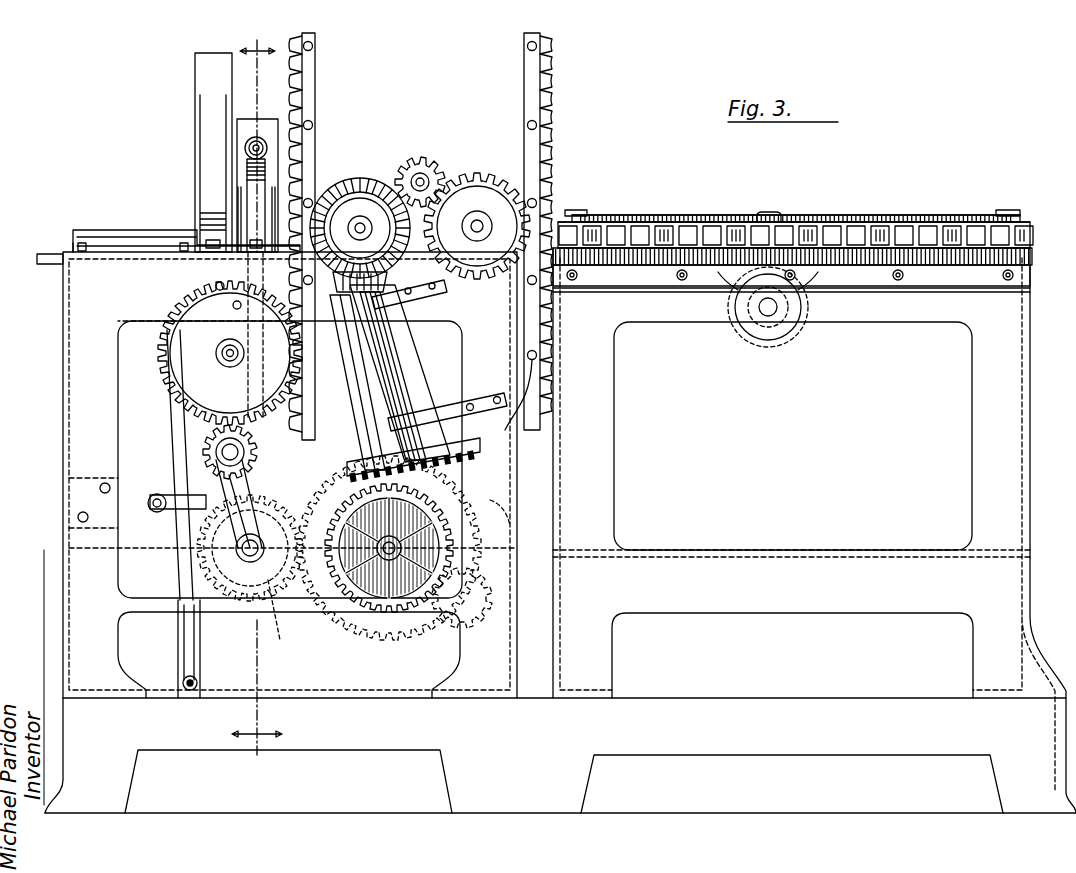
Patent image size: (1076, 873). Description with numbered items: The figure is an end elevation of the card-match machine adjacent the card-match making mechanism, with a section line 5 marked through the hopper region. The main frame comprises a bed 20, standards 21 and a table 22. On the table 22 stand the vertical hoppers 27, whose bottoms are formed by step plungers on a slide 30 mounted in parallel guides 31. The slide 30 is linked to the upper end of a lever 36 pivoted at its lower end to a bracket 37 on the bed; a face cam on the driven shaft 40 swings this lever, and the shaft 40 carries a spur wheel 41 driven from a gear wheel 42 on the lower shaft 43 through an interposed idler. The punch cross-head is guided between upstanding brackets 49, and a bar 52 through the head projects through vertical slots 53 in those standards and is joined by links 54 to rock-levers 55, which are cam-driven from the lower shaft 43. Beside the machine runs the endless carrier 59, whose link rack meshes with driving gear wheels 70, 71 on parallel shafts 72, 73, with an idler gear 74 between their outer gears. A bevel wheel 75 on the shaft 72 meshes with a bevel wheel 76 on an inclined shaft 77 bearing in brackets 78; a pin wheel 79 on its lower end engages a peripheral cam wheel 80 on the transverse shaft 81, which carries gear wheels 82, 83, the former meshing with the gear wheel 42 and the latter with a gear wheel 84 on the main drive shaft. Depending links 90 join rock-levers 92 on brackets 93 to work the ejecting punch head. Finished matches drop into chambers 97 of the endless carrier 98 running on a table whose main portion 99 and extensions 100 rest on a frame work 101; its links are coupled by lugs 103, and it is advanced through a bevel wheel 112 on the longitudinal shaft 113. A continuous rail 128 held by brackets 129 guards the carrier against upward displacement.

The section line 5- 5 is at (257, 392).
The bed 20 is at (560, 755).
The standards 21 is at (63, 296).
The table 22 is at (40, 260).
The vertical hoppers 27 is at (207, 68).
The slide 30 is at (123, 230).
The parallel guides 31 is at (80, 232).
The lever 36 is at (178, 636).
The bracket 37 is at (197, 683).
The driven shaft 40 is at (224, 363).
The spur wheel 41 is at (230, 353).
The gear wheel 42 is at (195, 590).
The lower shaft 43 is at (250, 451).
The upstanding brackets 49 is at (247, 128).
The bar 52 is at (262, 142).
The vertical slots 53 is at (246, 165).
The links 54 is at (250, 183).
The rock-levers 55 is at (172, 494).
The carrier 59 is at (316, 48).
The driving gear wheel 70 is at (358, 215).
The driving gear wheel 71 is at (470, 215).
The shaft 72 is at (338, 205).
The shaft 73 is at (480, 212).
The idler gear 74 is at (433, 165).
The bevel wheel 75 is at (364, 220).
The bevel wheel 76 is at (388, 277).
The inclined shaft 77 is at (400, 366).
The brackets 78 is at (447, 298).
The pin wheel 79 is at (482, 444).
The peripheral cam wheel 80 is at (389, 560).
The transverse shaft 81 is at (384, 558).
The gear wheel 82 is at (462, 598).
The gear wheel 83 is at (432, 605).
The gear wheel 84 is at (283, 621).
The depending links 90 is at (345, 383).
The rock-levers 92 is at (478, 478).
The brackets 93 is at (505, 505).
The compartments or chambers 97 is at (706, 228).
The endless carrier 98 is at (825, 233).
The main portion of table 99 is at (1034, 254).
The table extensions 100 is at (705, 262).
The frame work 101 is at (792, 579).
The lugs 103 is at (726, 233).
The bevel gear wheel 112 is at (790, 332).
The longitudinally-extending shaft 113 is at (755, 337).
The continuous rail 128 is at (980, 220).
The brackets 129 is at (580, 211).